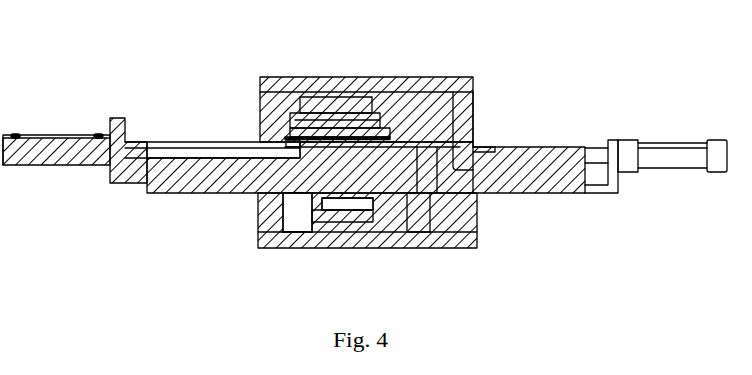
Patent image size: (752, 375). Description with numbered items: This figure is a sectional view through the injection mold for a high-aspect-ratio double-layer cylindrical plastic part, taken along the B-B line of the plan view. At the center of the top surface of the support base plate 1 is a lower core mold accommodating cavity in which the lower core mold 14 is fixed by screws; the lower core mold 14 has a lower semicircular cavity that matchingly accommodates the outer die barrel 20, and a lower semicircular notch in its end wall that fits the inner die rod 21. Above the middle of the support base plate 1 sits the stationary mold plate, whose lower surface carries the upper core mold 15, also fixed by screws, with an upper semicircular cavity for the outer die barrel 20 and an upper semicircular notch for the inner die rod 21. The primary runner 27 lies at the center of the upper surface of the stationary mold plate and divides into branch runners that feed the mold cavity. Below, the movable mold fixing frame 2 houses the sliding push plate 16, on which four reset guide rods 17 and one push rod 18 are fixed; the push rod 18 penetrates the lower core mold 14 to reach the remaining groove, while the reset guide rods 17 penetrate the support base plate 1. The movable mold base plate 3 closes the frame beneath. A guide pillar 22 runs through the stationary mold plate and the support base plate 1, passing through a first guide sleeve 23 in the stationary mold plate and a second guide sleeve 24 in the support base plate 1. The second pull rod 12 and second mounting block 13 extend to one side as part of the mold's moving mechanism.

The support base plate 1 is at (508, 175).
The movable mold fixing frame 2 is at (270, 222).
The movable mold base plate 3 is at (292, 236).
The second pull rod 12 is at (191, 147).
The second mounting block 13 is at (283, 140).
The lower core mold 14 is at (346, 150).
The upper core mold 15 is at (315, 122).
The push plate 16 is at (345, 207).
The reset guide rod 17 is at (317, 203).
The push rod 18 is at (412, 193).
The outer die barrel 20 is at (332, 128).
The inner die rod 21 is at (293, 142).
The guide pillar 22 is at (453, 138).
The first guide sleeve 23 is at (470, 148).
The second guide sleeve 24 is at (482, 148).
The primary runner 27 is at (346, 95).